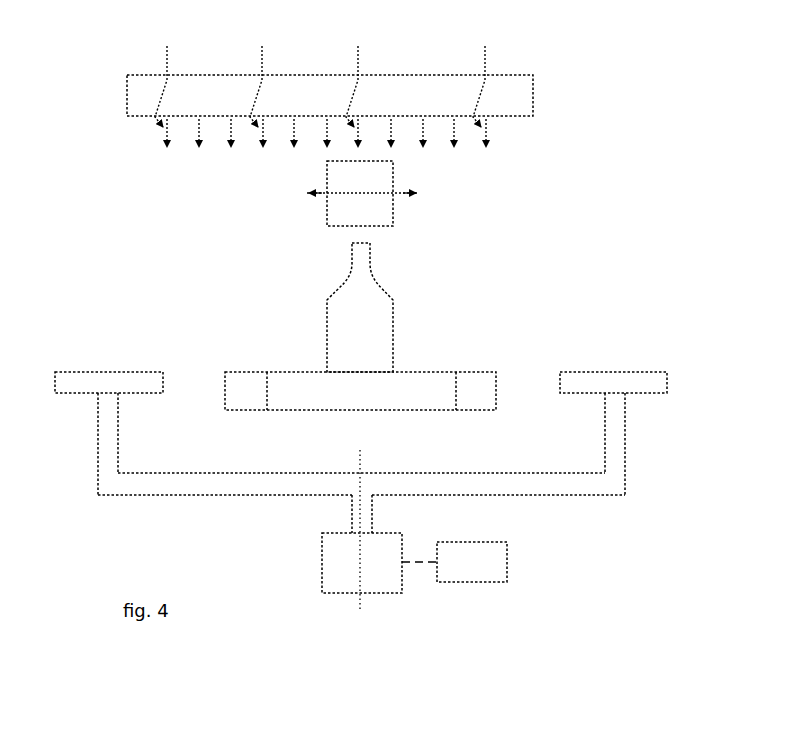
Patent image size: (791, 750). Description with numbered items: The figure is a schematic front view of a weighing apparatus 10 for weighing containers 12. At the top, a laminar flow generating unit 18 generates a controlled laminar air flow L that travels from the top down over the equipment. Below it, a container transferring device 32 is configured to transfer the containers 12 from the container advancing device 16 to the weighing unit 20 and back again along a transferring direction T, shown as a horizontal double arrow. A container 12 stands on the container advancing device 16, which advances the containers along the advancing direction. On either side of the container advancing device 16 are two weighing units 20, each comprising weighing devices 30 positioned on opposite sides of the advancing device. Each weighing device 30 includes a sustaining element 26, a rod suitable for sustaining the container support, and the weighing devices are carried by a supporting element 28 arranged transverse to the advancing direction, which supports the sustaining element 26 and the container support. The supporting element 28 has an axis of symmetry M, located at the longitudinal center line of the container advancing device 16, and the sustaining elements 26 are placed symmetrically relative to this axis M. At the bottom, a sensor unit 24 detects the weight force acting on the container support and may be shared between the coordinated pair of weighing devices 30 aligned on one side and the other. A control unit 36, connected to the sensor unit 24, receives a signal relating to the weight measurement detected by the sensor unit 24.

The weighing apparatus 10 is at (563, 233).
The container 12 is at (379, 300).
The container advancing device 16 is at (432, 386).
The laminar flow generating unit 18 is at (395, 88).
The weighing unit 20 is at (361, 471).
The sensor unit 24 is at (336, 575).
The sustaining element 26 is at (110, 441).
The supporting element 28 is at (215, 484).
The weighing device 30 is at (102, 364).
The container transferring device 32 is at (385, 217).
The control unit 36 is at (480, 566).
The laminar air flow L is at (321, 86).
The transferring direction T is at (358, 193).
The axis of symmetry M is at (362, 600).